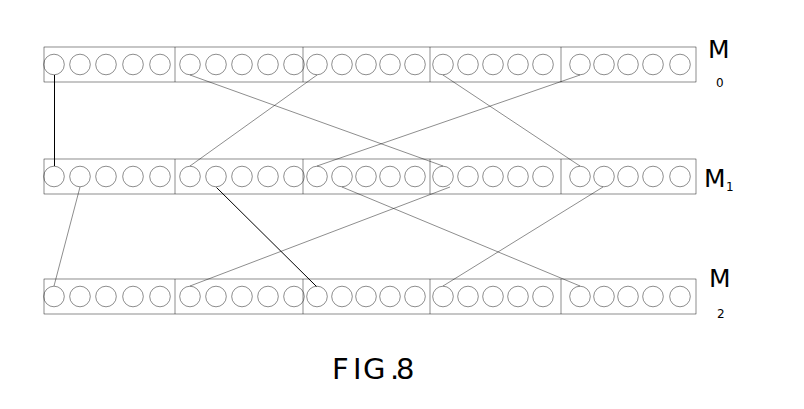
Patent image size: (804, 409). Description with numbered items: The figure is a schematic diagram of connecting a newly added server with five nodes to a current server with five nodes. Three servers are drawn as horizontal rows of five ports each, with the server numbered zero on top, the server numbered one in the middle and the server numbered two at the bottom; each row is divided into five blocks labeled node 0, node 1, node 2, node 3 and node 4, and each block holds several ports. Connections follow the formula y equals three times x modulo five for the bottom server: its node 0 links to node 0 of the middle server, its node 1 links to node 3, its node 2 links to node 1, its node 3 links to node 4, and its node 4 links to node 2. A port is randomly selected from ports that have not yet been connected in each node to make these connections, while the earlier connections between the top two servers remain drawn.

The node 0 is at (109, 167).
The node 1 is at (242, 167).
The node 2 is at (368, 167).
The node 3 is at (497, 167).
The node 4 is at (630, 164).